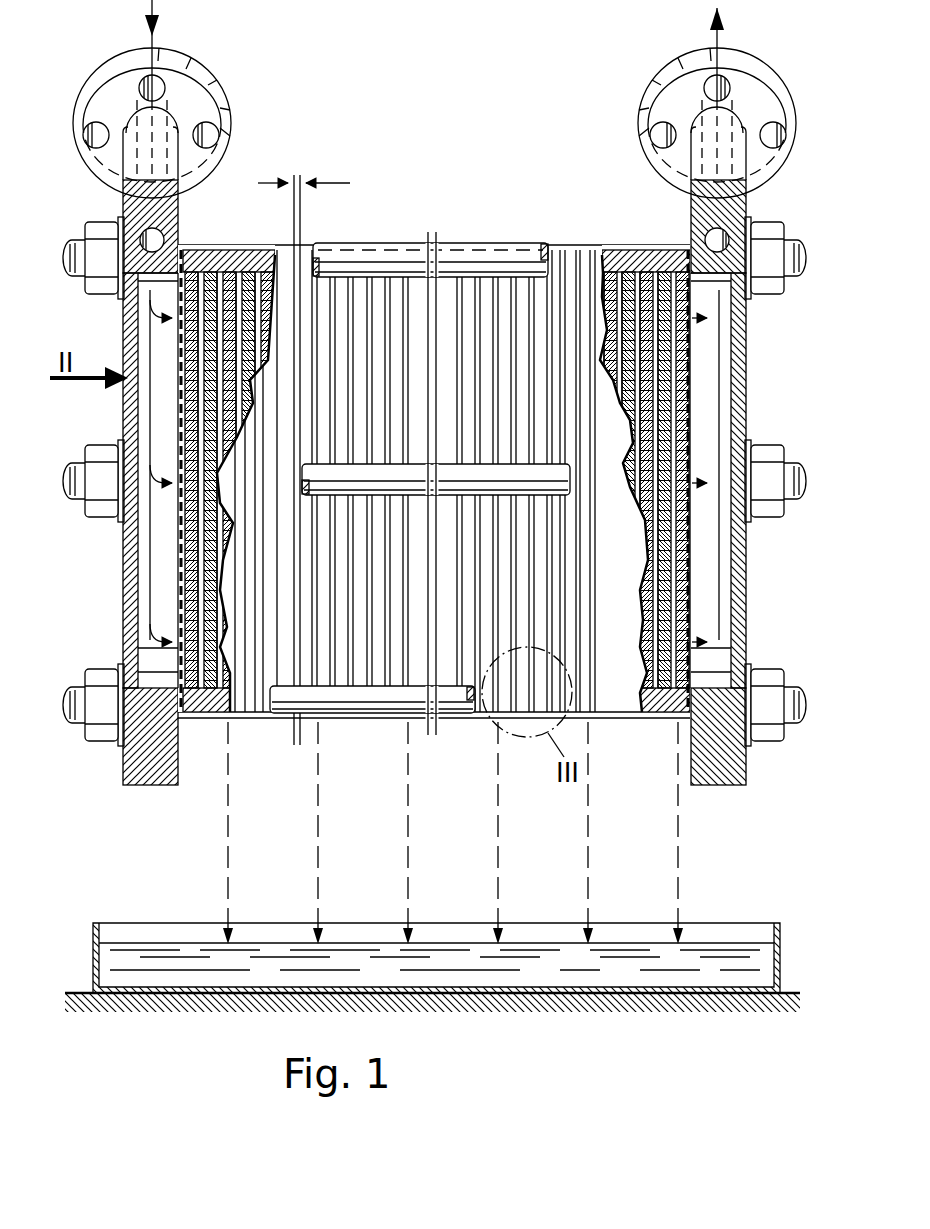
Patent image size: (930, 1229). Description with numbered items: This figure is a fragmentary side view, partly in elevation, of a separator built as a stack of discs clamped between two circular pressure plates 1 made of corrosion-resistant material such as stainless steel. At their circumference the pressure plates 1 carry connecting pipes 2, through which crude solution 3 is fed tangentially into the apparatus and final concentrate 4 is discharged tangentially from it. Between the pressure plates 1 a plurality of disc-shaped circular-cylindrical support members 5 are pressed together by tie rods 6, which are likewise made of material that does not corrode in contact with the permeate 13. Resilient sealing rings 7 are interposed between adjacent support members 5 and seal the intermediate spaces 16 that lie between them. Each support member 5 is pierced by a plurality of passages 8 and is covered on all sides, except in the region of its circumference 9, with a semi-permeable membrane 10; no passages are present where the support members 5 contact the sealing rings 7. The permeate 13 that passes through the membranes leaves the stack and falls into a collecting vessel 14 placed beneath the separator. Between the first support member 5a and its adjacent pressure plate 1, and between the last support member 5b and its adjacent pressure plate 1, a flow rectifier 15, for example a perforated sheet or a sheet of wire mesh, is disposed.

The pressure plate 1 is at (158, 778).
The connecting pipe 2 is at (205, 75).
The crude solution 3 is at (155, 42).
The final concentrate 4 is at (720, 40).
The support member 5 is at (232, 248).
The first support member 5a is at (192, 250).
The last support member 5b is at (670, 250).
The tie rod 6 is at (78, 250).
The resilient sealing ring 7 is at (220, 718).
The passage 8 is at (178, 400).
The circumference 9 is at (572, 260).
The semi-permeable membrane 10 is at (253, 352).
The permeate 13 is at (317, 822).
The collecting vessel 14 is at (730, 924).
The flow rectifier 15 is at (178, 608).
The intermediate space 16 is at (655, 492).